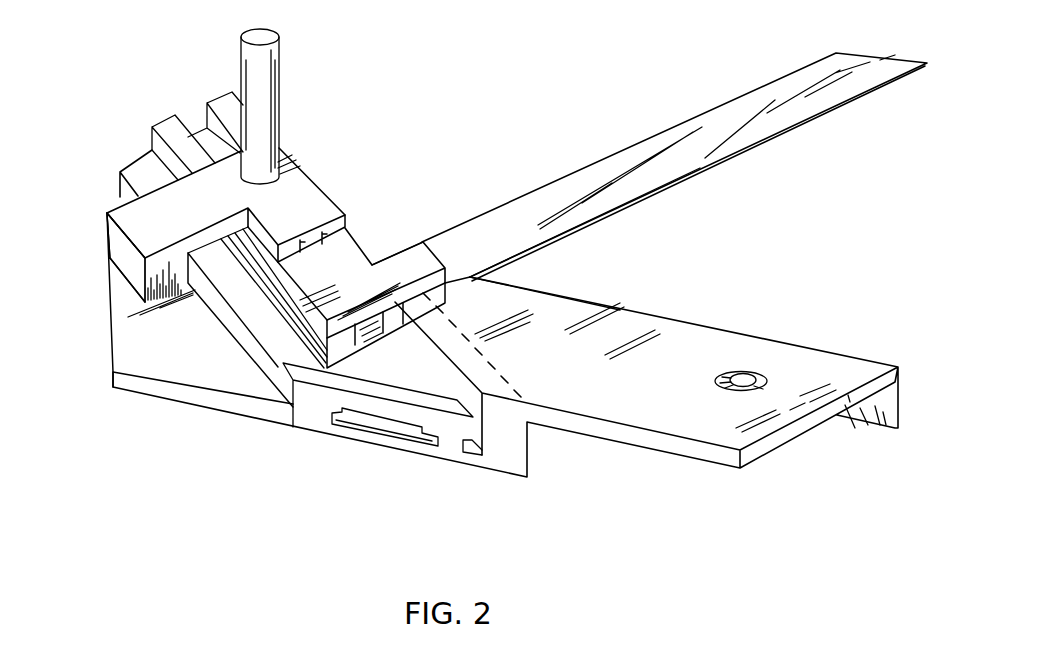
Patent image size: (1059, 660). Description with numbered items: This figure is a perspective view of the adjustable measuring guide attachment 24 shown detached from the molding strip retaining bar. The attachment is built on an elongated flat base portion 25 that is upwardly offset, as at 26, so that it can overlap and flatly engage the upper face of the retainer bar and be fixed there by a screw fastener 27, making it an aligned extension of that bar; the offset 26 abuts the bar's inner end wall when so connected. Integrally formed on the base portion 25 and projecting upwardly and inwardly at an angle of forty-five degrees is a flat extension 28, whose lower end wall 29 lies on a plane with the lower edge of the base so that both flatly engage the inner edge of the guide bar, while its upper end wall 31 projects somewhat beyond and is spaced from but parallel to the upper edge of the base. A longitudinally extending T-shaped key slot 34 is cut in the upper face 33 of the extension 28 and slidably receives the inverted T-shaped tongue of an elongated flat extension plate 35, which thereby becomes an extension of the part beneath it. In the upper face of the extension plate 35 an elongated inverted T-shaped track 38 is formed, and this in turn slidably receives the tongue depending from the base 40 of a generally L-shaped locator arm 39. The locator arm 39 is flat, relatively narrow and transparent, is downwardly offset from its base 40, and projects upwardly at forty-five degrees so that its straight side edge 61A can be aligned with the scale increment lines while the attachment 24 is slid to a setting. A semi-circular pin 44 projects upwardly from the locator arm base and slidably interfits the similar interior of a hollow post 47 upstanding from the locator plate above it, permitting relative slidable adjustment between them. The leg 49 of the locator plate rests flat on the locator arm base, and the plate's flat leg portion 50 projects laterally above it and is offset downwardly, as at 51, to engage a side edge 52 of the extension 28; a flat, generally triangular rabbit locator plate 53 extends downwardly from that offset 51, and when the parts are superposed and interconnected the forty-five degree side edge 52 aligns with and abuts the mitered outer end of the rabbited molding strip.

The adjustable measuring guide attachment 24 is at (425, 162).
The elongated flat base portion 25 is at (533, 271).
The offset 26 is at (527, 445).
The screw fastener 27 is at (742, 370).
The flat extension 28 is at (313, 417).
The lower end wall 29 is at (413, 440).
The upper end wall 31 is at (118, 183).
The upper face 33 is at (258, 325).
The T-shaped key slot 34 is at (375, 427).
The extension plate 35 is at (252, 272).
The inverted T-shaped track 38 is at (163, 123).
The locator arm 39 is at (653, 137).
The base 40 is at (410, 252).
The semi-circular pin 44 is at (348, 253).
The hollow post 47 is at (280, 80).
The leg 49 is at (318, 197).
The ledge 50 is at (123, 220).
The offset 51 is at (113, 247).
The side edge 52 is at (160, 300).
The triangular rabbit locator plate 53 is at (130, 358).
The straight side edge 61A is at (700, 168).